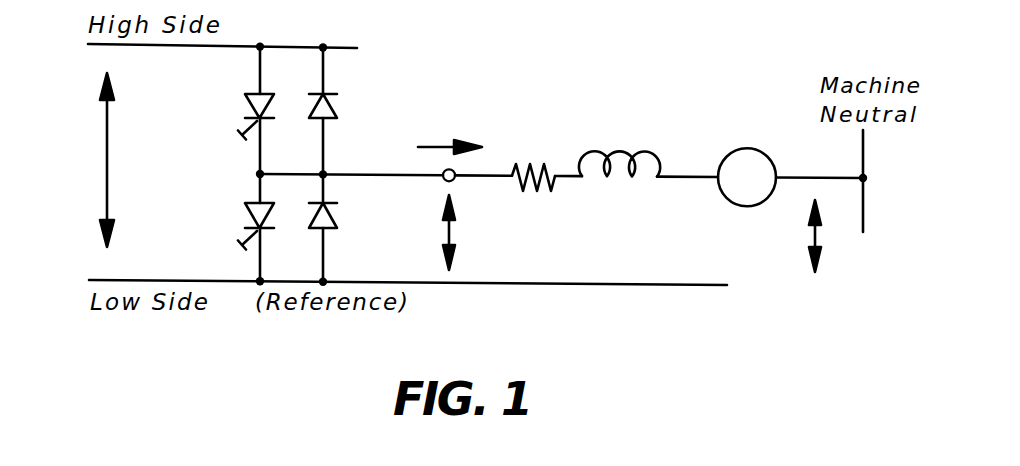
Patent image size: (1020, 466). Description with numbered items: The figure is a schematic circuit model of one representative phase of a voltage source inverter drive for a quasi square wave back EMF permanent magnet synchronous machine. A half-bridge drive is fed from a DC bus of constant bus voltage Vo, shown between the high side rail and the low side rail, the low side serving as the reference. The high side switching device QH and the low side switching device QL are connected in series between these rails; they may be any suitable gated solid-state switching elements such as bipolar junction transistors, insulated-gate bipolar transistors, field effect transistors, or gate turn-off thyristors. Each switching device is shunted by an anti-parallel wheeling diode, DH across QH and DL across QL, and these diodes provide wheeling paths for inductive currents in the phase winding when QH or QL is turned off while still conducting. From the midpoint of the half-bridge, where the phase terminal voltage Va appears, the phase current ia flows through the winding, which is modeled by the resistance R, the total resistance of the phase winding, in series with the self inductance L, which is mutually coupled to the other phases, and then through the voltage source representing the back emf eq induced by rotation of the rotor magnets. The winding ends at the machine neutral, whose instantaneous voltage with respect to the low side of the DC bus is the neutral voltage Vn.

The high side switching device QH is at (235, 110).
The anti-parallel wheeling diode DH is at (343, 111).
The low side switching device QL is at (235, 227).
The anti-parallel wheeling diode DL is at (342, 227).
The resistance R is at (533, 160).
The self inductance L is at (631, 203).
The back emf eq is at (784, 121).
The bus voltage Vo is at (66, 132).
The phase terminal voltage Va is at (411, 203).
The neutral voltage Vn is at (783, 208).
The phase current ia is at (447, 130).